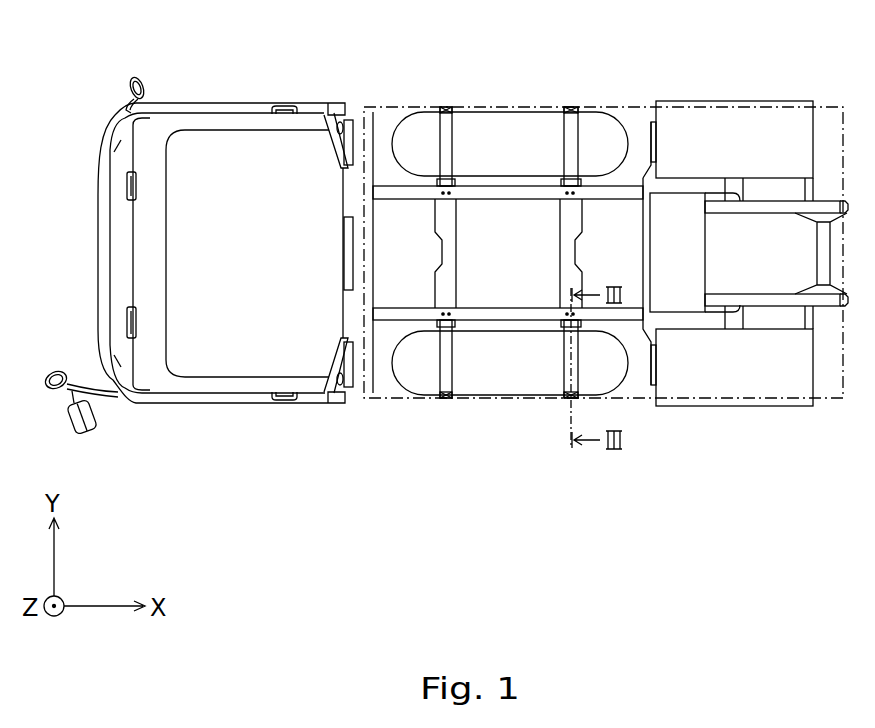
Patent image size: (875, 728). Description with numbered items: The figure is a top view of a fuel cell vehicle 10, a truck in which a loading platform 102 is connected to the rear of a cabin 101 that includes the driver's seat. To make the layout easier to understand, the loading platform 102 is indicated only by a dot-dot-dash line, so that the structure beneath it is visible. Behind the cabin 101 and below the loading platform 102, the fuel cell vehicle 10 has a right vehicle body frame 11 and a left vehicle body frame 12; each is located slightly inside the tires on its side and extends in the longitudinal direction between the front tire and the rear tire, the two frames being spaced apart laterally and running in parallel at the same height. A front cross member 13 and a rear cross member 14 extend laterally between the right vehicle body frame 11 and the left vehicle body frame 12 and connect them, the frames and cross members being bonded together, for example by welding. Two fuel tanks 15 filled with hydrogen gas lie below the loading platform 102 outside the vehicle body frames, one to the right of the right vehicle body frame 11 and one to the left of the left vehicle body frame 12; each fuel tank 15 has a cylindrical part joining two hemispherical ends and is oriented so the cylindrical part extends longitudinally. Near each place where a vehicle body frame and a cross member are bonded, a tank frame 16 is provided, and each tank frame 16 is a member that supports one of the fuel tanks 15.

The fuel cell vehicle 10 is at (103, 59).
The cabin 101 is at (240, 103).
The loading platform 102 is at (376, 102).
The right vehicle body frame 11 is at (618, 187).
The left vehicle body frame 12 is at (620, 318).
The front cross member 13 is at (457, 233).
The rear cross member 14 is at (582, 233).
The fuel tank 15 is at (490, 130).
The tank frame 16 is at (444, 90).